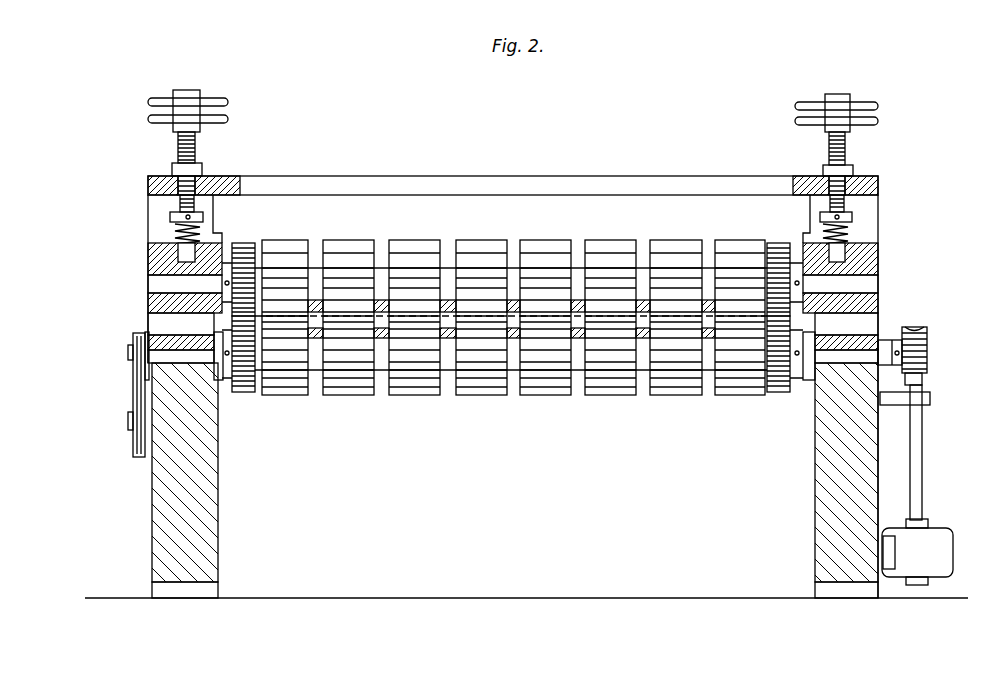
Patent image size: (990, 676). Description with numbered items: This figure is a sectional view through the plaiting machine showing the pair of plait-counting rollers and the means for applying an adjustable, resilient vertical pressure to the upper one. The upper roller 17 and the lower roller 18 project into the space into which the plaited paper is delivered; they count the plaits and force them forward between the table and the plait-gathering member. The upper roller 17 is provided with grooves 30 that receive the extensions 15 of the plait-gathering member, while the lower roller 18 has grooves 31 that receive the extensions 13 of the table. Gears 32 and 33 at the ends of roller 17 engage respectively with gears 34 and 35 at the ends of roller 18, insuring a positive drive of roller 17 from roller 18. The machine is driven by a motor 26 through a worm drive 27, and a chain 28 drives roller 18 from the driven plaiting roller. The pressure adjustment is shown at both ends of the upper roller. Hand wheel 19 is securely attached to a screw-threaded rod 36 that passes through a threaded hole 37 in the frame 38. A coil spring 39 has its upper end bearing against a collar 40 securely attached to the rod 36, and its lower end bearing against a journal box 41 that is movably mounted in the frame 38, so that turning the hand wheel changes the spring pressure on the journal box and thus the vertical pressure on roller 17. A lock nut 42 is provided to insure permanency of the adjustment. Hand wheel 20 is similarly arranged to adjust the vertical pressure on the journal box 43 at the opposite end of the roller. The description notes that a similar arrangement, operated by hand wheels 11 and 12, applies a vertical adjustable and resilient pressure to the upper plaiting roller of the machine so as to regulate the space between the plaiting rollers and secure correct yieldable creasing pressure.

The hand wheel 11 is at (216, 97).
The hand wheel 12 is at (878, 104).
The extensions 13 is at (452, 400).
The extensions 15 is at (452, 400).
The upper roller 17 is at (283, 245).
The lower roller 18 is at (305, 396).
The hand wheel 19 is at (224, 120).
The hand wheel 20 is at (878, 119).
The motor 26 is at (935, 534).
The worm drive 27 is at (936, 337).
The chain 28 is at (133, 393).
The grooves 30 is at (383, 255).
The grooves 31 is at (383, 397).
The gear 32 is at (240, 243).
The gear 33 is at (781, 244).
The gear 34 is at (248, 394).
The gear 35 is at (785, 394).
The screw-threaded rod 36 is at (178, 143).
The threaded hole 37 is at (176, 197).
The frame 38 is at (148, 184).
The coil spring 39 is at (166, 233).
The collar 40 is at (170, 217).
The journal box 41 is at (150, 263).
The lock nut 42 is at (204, 170).
The journal box 43 is at (878, 263).